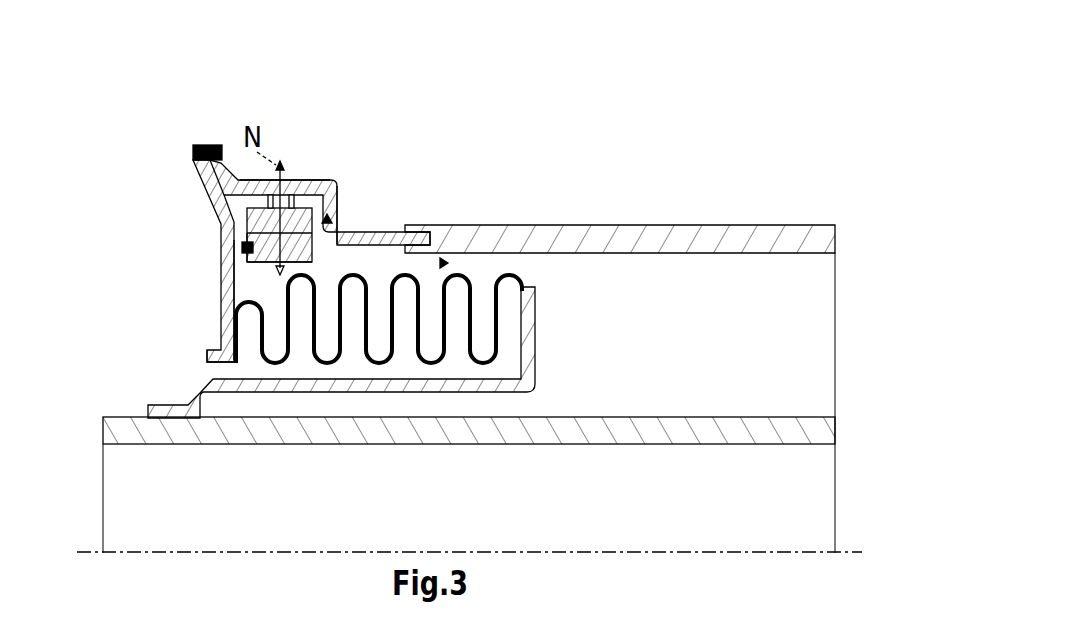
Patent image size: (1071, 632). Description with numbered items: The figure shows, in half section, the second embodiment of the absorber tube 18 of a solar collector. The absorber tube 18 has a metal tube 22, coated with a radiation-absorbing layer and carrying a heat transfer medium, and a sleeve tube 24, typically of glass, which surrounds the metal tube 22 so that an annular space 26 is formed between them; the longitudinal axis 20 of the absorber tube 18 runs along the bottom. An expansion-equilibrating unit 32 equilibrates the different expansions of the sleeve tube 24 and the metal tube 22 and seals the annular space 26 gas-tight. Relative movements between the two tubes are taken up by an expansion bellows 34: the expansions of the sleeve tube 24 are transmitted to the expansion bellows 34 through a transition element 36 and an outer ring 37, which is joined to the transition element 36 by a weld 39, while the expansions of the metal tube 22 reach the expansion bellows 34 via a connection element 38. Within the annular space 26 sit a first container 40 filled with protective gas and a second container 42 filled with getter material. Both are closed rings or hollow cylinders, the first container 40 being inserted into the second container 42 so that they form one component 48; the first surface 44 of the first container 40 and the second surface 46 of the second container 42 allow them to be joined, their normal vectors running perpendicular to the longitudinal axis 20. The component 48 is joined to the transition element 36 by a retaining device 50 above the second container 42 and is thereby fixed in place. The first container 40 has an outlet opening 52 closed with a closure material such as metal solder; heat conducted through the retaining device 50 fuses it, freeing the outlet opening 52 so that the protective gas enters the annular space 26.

The absorber tube 18 is at (688, 130).
The longitudinal axis 20 is at (143, 552).
The metal tube 22 is at (667, 413).
The sleeve tube 24 is at (500, 225).
The annular space 26 is at (731, 321).
The expansion-equilibrating unit 32 is at (152, 122).
The expansion bellows 34 is at (463, 227).
The transition element 36 is at (299, 178).
The outer ring 37 is at (212, 347).
The connection element 38 is at (537, 360).
The weld 39 is at (208, 143).
The first container 40 is at (245, 266).
The second container 42 is at (337, 176).
The first surface 44 is at (240, 216).
The second surface 46 is at (291, 201).
The component 48 is at (333, 217).
The retaining device 50 is at (290, 177).
The outlet opening 52 is at (242, 249).